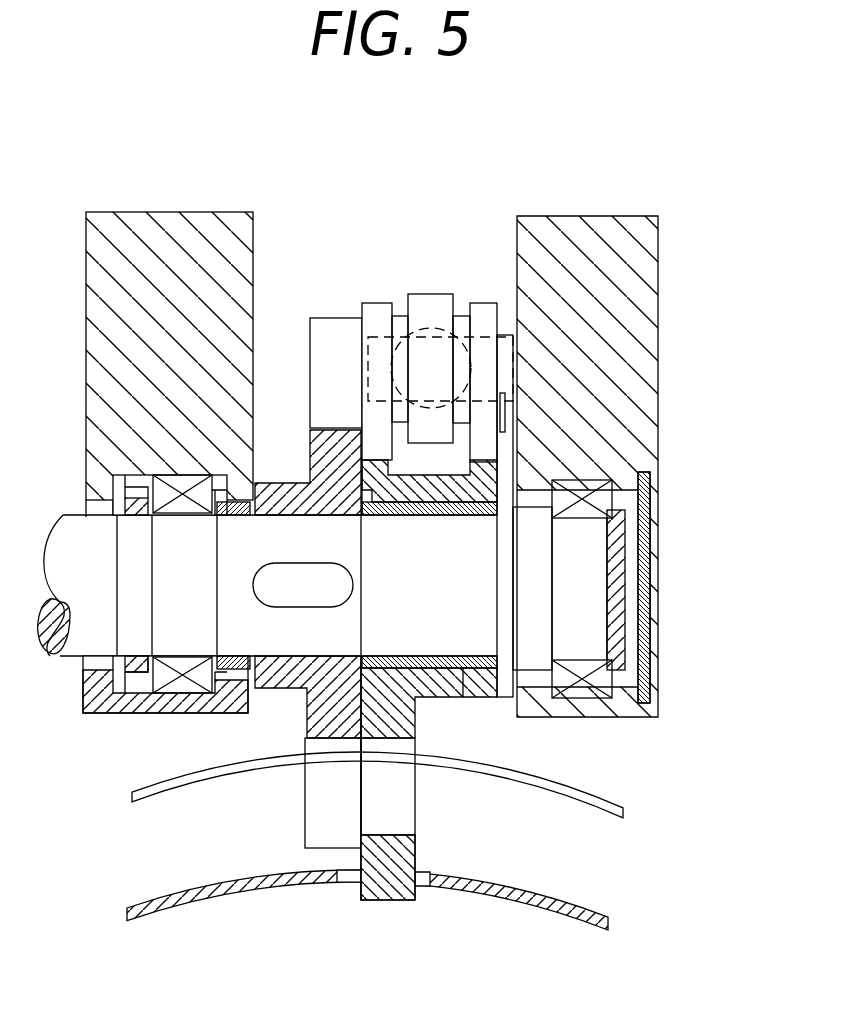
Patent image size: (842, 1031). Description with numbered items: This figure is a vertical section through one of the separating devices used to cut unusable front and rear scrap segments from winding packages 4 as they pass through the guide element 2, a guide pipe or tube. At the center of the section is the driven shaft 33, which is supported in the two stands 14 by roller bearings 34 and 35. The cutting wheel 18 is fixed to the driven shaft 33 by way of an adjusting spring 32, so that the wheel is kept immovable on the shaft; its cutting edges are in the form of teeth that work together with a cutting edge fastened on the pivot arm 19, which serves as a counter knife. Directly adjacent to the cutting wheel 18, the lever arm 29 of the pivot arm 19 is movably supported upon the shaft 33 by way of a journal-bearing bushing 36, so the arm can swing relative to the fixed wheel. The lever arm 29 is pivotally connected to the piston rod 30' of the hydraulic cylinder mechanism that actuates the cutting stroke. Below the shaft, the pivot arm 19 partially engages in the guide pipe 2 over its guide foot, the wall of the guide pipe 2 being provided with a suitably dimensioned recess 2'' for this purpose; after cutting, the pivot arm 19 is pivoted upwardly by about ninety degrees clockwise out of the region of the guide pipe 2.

The guide element 2 is at (381, 894).
The recess 2'' is at (364, 916).
The winding packages 4 is at (592, 798).
The stands 14 is at (244, 237).
The cutting wheel 18 is at (315, 450).
The pivot arm 19 is at (393, 887).
The lever arm 29 is at (487, 480).
The piston rod 30' is at (411, 446).
The adjusting spring 32 is at (305, 595).
The driven shaft 33 is at (62, 540).
The roller bearing 34 is at (177, 687).
The roller bearing 35 is at (587, 487).
The journal-bearing bushing 36 is at (465, 683).